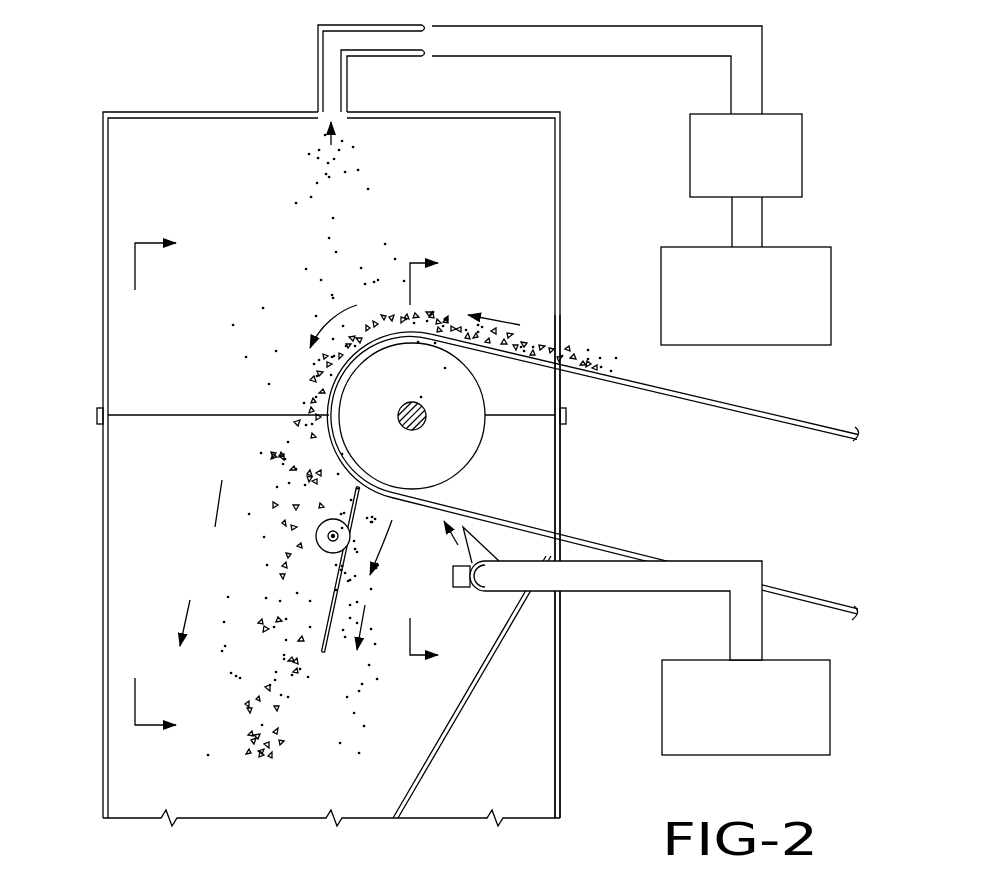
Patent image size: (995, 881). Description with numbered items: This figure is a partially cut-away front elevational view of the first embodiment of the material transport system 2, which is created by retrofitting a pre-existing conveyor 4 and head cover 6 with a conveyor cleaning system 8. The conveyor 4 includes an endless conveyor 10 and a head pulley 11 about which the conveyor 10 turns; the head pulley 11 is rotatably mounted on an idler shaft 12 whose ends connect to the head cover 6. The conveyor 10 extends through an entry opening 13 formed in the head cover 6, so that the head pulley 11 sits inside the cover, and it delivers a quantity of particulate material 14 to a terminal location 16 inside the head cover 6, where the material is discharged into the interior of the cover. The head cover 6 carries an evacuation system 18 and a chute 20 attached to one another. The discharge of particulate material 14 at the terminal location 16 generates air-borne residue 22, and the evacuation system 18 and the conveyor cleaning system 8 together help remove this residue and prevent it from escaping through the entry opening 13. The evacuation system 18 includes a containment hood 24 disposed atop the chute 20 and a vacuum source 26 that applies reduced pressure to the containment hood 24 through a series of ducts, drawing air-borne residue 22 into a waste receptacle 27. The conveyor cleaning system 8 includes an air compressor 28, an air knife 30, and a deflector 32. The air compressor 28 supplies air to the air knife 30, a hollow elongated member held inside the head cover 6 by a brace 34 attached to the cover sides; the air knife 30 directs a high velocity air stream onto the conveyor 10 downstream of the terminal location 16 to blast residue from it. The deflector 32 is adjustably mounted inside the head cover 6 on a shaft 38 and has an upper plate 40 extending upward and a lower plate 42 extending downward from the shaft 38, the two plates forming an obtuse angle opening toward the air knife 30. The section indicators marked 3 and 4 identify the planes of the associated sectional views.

The material transport system 2 is at (183, 92).
The section line 3- 3 is at (437, 460).
The conveyor 4 is at (790, 385).
The head cover 6 is at (572, 748).
The conveyor cleaning system 8 is at (398, 590).
The conveyor 10 is at (667, 398).
The head pulley 11 is at (458, 468).
The idler shaft 12 is at (418, 422).
The entry opening 13 is at (560, 480).
The particulate material 14 is at (248, 742).
The terminal location 16 is at (275, 380).
The evacuation system 18 is at (303, 85).
The chute 20 is at (380, 794).
The air-borne residue 22 is at (232, 345).
The containment hood 24 is at (560, 206).
The vacuum source 26 is at (803, 148).
The waste receptacle 27 is at (831, 297).
The air compressor 28 is at (830, 710).
The air knife 30 is at (493, 598).
The deflector 32 is at (322, 598).
The brace 34 is at (460, 583).
The shaft 38 is at (330, 534).
The upper plate 40 is at (343, 490).
The lower plate 42 is at (324, 633).